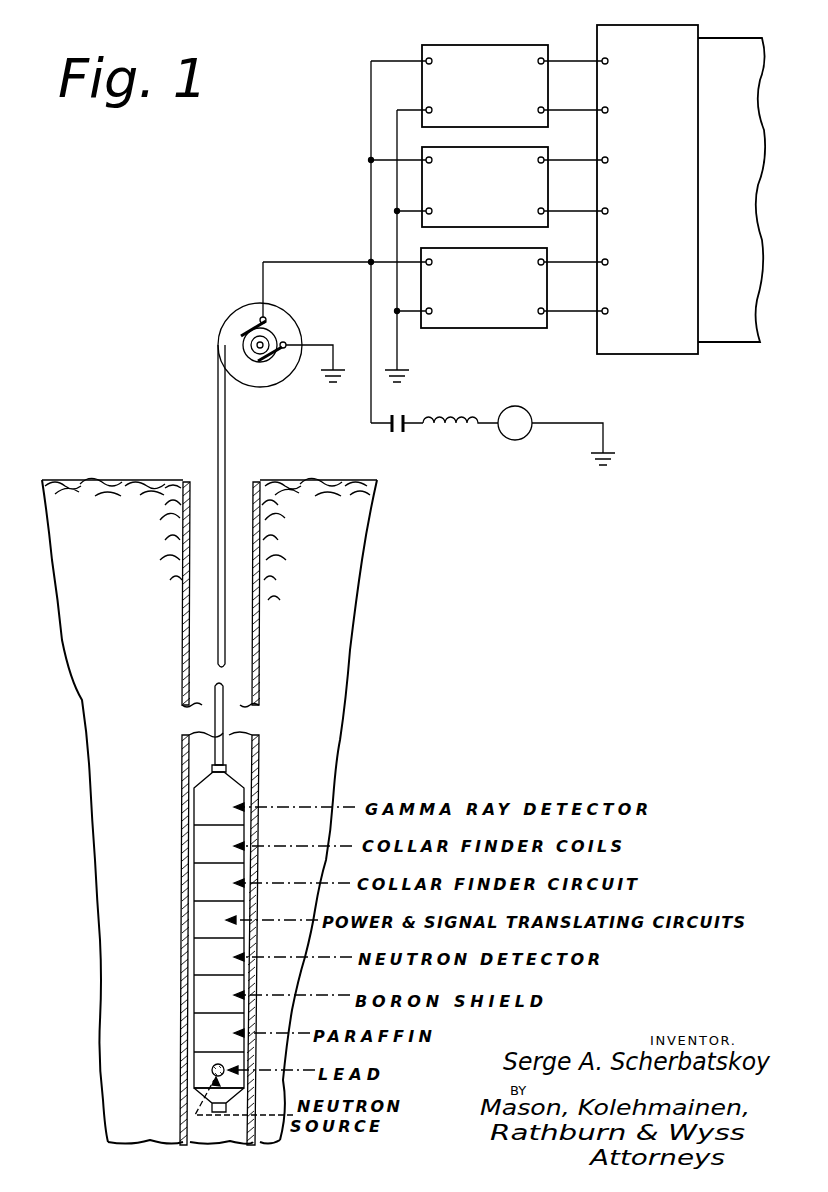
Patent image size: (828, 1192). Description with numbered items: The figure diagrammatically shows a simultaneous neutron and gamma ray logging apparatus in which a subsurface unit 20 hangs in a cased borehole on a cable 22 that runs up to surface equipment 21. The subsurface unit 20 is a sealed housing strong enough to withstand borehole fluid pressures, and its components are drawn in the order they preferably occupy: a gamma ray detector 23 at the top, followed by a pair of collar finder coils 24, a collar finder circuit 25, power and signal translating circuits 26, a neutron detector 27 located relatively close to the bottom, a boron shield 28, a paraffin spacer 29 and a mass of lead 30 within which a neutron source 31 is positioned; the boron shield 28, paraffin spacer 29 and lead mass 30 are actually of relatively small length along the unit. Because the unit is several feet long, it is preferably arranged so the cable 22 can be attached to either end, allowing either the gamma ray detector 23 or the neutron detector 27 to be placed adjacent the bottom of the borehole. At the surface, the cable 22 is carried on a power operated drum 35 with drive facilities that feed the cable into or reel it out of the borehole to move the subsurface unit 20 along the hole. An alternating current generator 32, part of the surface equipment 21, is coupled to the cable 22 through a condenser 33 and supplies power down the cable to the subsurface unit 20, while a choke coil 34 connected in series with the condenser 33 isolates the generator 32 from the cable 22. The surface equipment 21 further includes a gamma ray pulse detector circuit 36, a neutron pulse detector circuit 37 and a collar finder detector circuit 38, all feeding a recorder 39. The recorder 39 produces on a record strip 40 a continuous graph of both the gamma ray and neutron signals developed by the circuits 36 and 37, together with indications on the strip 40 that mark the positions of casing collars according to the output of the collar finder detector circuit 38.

The subsurface unit 20 is at (232, 782).
The surface equipment 21 is at (493, 363).
The cable 22 is at (220, 425).
The gamma ray detector 23 is at (205, 808).
The collar finder coils 24 is at (210, 842).
The collar finder circuit 25 is at (205, 879).
The power and signal translating circuits 26 is at (205, 921).
The neutron detector 27 is at (210, 962).
The boron shield 28 is at (200, 996).
The paraffin spacer 29 is at (210, 1034).
The lead mass 30 is at (207, 1060).
The neutron source 31 is at (195, 1072).
The alternating current generator 32 is at (516, 440).
The condenser 33 is at (400, 435).
The choke coil 34 is at (455, 432).
The power operated drum 35 is at (270, 378).
The gamma ray pulse detector circuit 36 is at (474, 45).
The neutron pulse detector circuit 37 is at (548, 190).
The collar finder detector circuit 38 is at (547, 302).
The recorder 39 is at (652, 347).
The record strip 40 is at (745, 330).